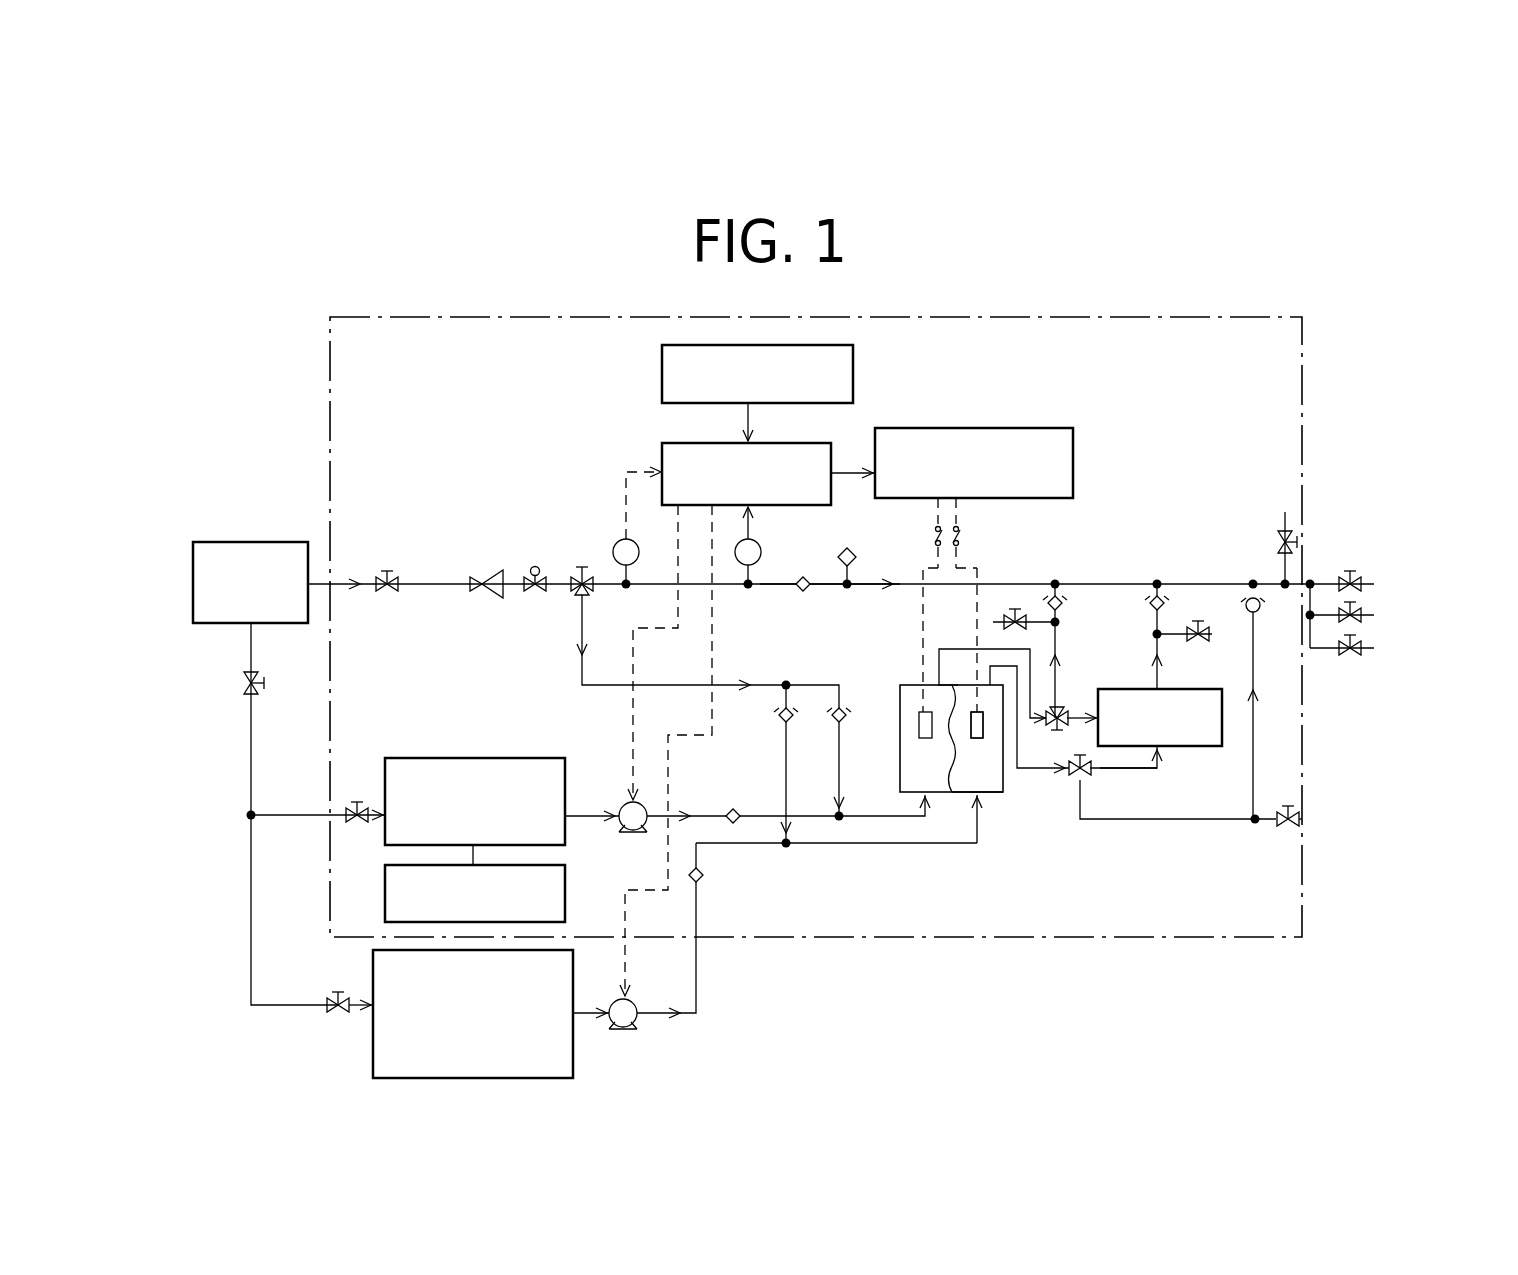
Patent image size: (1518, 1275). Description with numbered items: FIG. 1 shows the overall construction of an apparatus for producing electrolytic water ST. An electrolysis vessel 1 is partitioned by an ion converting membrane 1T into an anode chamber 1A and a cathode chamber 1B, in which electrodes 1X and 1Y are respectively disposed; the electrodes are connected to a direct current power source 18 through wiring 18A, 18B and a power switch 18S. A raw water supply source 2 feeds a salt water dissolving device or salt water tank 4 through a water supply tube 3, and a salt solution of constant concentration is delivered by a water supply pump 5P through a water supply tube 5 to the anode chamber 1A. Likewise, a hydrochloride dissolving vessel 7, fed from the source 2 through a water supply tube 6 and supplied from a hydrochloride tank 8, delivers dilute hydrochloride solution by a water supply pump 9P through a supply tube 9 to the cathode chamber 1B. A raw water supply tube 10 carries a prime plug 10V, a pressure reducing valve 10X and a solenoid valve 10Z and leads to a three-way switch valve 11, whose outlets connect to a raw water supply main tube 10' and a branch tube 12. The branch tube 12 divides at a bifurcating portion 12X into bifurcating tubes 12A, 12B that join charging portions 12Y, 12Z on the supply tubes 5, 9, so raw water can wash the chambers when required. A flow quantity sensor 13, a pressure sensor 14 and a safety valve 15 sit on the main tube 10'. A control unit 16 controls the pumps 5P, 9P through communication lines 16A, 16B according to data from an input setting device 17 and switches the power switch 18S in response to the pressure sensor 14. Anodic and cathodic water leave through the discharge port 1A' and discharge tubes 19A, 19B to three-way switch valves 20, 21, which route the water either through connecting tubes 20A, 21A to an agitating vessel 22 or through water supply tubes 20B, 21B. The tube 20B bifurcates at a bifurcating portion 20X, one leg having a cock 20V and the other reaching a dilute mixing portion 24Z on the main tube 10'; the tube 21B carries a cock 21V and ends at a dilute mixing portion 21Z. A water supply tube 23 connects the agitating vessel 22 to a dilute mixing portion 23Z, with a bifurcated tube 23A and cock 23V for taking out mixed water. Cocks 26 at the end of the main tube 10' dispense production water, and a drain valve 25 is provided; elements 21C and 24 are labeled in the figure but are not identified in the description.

The electrolysis vessel 1 is at (896, 680).
The anode chamber 1A is at (992, 826).
The discharge port 1A' is at (967, 695).
The cathode chamber 1B is at (922, 695).
The membrane 1T is at (952, 794).
The electrode 1X is at (984, 737).
The electrode 1Y is at (943, 685).
The raw water supply source 2 is at (252, 542).
The water supply tube 3 is at (250, 880).
The salt water dissolving device or salt water tank 4 is at (575, 1045).
The water supply tube 5 is at (696, 967).
The water supply pump 5P is at (655, 1025).
The water supply tube 6 is at (365, 800).
The hydrochloride dissolving vessel 7 is at (486, 758).
The hydrochloride tank 8 is at (385, 900).
The supply tube 9 is at (700, 812).
The water supply pump 9P is at (623, 802).
The raw water supply tube 10 is at (809, 614).
The raw water supply main tube 10' is at (811, 605).
The prime plug 10V is at (387, 570).
The pressure reducing valve 10X is at (486, 571).
The solenoid valve 10Z is at (537, 565).
The three-way switch valve 11 is at (580, 568).
The branch tube 12 is at (680, 693).
The bifurcating tube 12A is at (786, 800).
The bifurcating tube 12B is at (842, 742).
The bifurcating portion 12X is at (786, 685).
The charging portion 12Y is at (786, 852).
The charging portion 12Z is at (839, 825).
The flow quantity sensor 13 is at (614, 547).
The pressure sensor 14 is at (762, 548).
The safety valve 15 is at (854, 560).
The control unit 16 is at (825, 440).
The communication line 16A is at (712, 708).
The communication line 16B is at (633, 720).
The input setting device 17 is at (662, 378).
The direct current power source 18 is at (996, 428).
The wiring 18A is at (976, 565).
The wiring 18B is at (923, 604).
The power switch 18S is at (967, 532).
The discharge tube 19A is at (1047, 783).
The discharge tube 19B is at (962, 652).
The three-way switch valve 20 is at (1092, 781).
The connecting tube 20A is at (1162, 768).
The water supply tube 20B is at (1178, 820).
The cock 20V is at (1300, 807).
The bifurcating portion 20X is at (1254, 822).
The three-way switch valve 21 is at (1064, 697).
The connecting tube 21A is at (1069, 730).
The water supply tube 21B is at (1059, 642).
The drain line 21C is at (1037, 621).
The cock 21V is at (1017, 608).
The dilute mixing portion 21Z is at (1059, 582).
The agitating vessel 22 is at (1222, 705).
The water supply tube 23 is at (1162, 684).
The bifurcated tube 23A is at (1167, 635).
The cock 23V is at (1200, 618).
The dilute mixing portion 23Z is at (1159, 582).
The pipe 24 is at (1258, 748).
The dilute mixing portion 24Z is at (1250, 580).
The drain valve 25 is at (1300, 555).
The cocks 26 is at (1384, 618).
The apparatus for producing an electrolytic water ST is at (1040, 942).